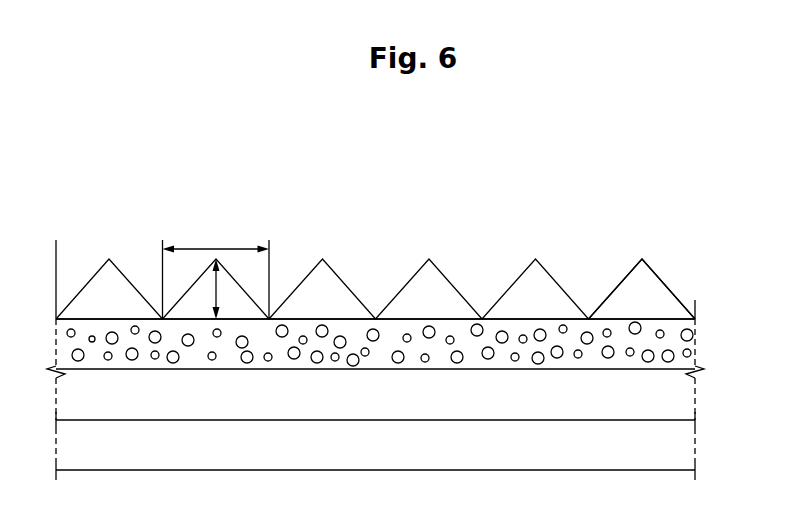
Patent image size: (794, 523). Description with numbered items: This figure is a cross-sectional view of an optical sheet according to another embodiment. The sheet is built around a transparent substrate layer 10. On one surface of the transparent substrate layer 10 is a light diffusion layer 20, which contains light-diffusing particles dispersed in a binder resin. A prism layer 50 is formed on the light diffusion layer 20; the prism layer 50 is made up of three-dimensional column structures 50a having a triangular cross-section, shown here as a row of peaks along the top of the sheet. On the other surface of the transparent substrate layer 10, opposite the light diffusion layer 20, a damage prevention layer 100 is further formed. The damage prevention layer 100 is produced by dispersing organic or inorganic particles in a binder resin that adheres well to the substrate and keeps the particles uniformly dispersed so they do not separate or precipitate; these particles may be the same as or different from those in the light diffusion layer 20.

The prism layer 50 is at (706, 290).
The 3D column structure 50a is at (654, 274).
The light diffusion layer 20 is at (691, 345).
The transparent substrate layer 10 is at (692, 398).
The damage prevention layer 100 is at (692, 446).